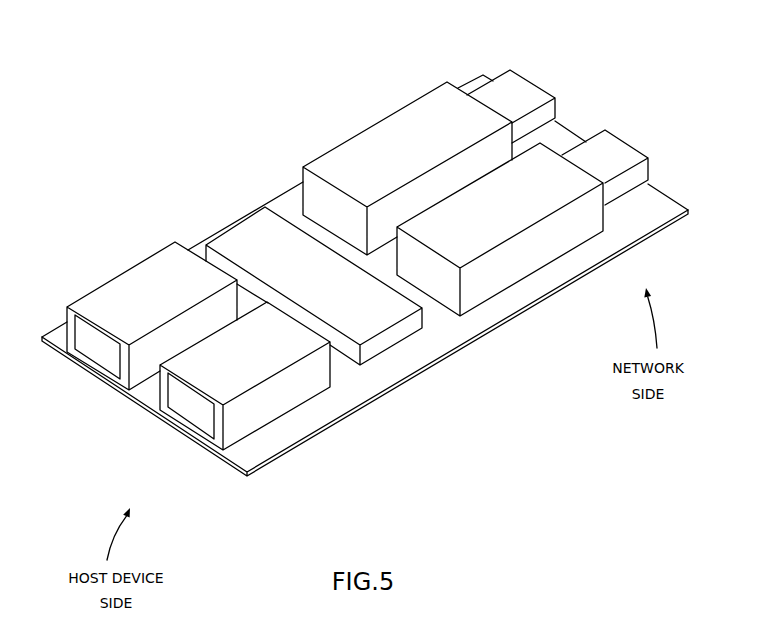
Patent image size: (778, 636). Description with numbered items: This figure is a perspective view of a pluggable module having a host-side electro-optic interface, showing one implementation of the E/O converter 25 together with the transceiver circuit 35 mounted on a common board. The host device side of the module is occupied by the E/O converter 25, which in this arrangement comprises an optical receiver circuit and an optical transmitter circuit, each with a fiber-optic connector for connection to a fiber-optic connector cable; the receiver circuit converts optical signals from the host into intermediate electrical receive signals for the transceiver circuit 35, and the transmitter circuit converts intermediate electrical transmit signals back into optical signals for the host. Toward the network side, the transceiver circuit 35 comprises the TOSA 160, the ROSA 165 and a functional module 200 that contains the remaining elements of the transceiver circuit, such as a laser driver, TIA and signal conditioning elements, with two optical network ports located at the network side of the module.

The E/O converter 25 is at (351, 260).
The transceiver circuit 35 is at (504, 381).
The transmitter optical subassembly (TOSA) 160 is at (355, 132).
The receiver optical subassembly (ROSA) 165 is at (545, 245).
The functional module 200 is at (393, 335).